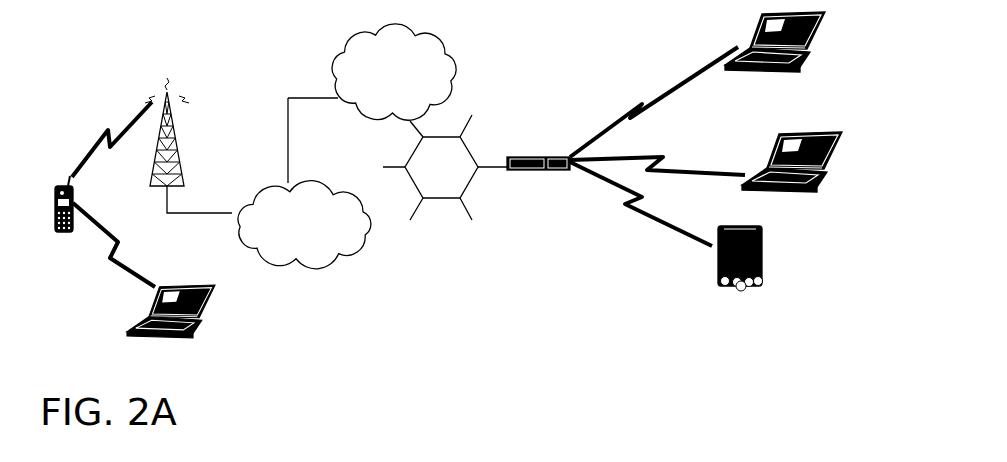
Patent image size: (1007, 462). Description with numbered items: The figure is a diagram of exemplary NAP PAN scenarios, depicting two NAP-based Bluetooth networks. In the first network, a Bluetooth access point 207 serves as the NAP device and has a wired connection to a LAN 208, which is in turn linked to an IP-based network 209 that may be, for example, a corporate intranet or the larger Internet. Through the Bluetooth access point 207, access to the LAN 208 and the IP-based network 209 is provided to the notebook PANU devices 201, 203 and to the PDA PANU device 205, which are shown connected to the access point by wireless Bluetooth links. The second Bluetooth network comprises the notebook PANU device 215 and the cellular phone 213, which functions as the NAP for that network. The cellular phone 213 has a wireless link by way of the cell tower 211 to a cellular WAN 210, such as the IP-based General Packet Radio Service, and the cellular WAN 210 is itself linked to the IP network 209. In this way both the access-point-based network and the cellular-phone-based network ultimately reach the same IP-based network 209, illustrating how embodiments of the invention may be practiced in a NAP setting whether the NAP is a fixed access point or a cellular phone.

The notebook PANU device 201 is at (750, 42).
The notebook PANU device 203 is at (815, 133).
The PDA PANU device 205 is at (762, 253).
The Bluetooth access point 207 is at (537, 157).
The LAN 208 is at (468, 150).
The IP-based network 209 is at (450, 47).
The cellular WAN 210 is at (377, 235).
The cell tower 211 is at (170, 118).
The cellular phone 213 is at (73, 207).
The notebook PANU device 215 is at (212, 300).